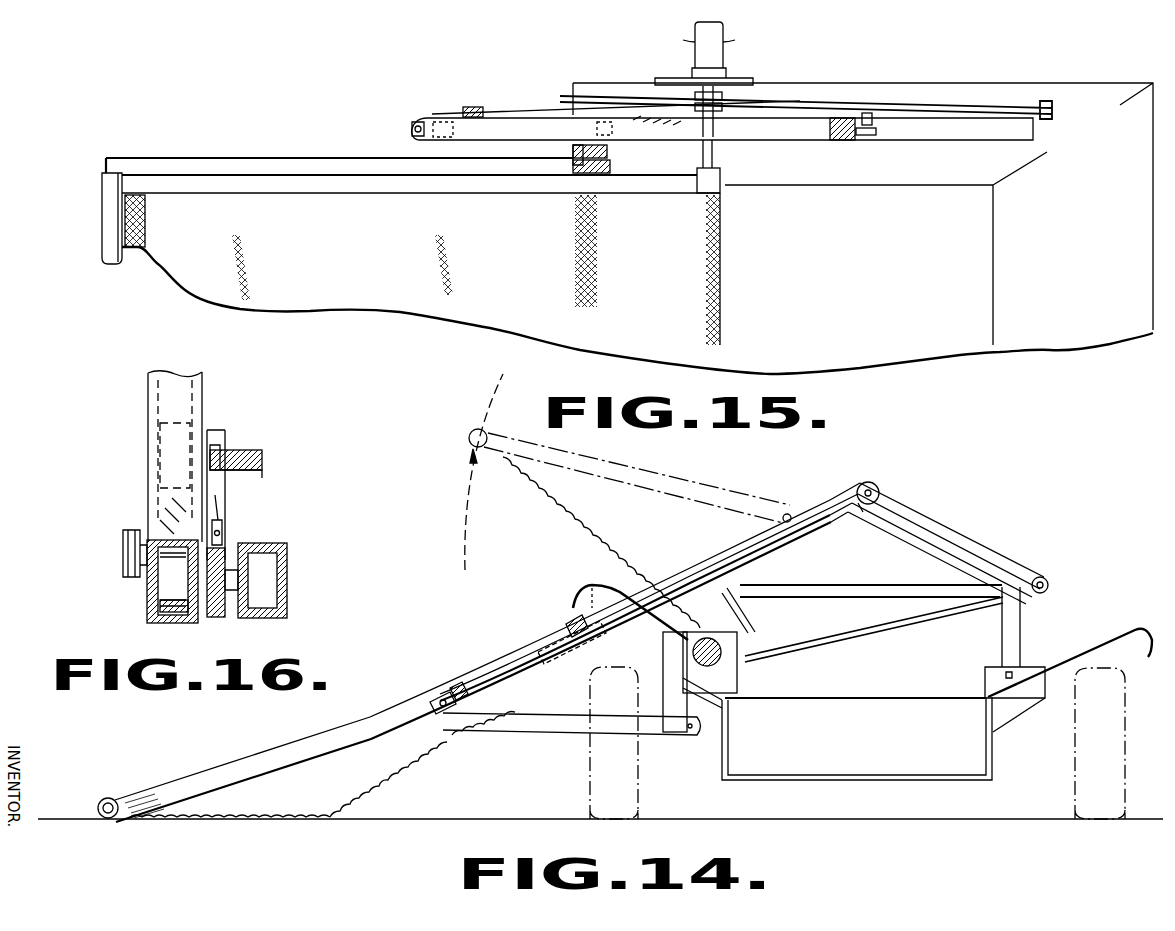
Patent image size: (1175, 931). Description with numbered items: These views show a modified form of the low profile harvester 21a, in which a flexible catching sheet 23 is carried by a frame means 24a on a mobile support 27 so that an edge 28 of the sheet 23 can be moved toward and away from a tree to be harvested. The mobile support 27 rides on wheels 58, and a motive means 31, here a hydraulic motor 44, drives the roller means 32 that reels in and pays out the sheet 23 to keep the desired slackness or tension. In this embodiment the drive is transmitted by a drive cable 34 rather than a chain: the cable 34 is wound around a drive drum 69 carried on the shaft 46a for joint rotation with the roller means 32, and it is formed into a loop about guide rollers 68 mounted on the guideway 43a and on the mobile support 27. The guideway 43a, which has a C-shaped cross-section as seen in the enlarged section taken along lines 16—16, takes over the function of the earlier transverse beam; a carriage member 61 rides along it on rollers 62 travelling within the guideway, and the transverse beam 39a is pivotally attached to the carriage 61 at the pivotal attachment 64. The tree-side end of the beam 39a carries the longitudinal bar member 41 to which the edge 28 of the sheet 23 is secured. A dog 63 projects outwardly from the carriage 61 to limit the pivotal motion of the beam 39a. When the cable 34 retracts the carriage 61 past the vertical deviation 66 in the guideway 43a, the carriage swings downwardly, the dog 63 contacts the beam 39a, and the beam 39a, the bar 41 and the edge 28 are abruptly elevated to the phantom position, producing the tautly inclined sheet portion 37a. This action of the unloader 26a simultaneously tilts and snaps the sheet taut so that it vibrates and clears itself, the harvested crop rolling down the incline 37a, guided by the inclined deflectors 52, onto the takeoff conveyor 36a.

In FIG. 14, the section lines 16 is at (462, 651).
In FIG. 14, the loader assembly 21a is at (996, 525).
In FIG. 15, the flexible catching sheet 23 is at (392, 272).
In FIG. 14, the flexible catching sheet 23 is at (318, 815).
In FIG. 15, the boom arm 24a is at (629, 231).
In FIG. 14, the boom arm 24a is at (473, 661).
In FIG. 14, the pivot axis 26a is at (555, 558).
In FIG. 14, the mobile support 27 is at (705, 750).
In FIG. 15, the edge of the sheet 28 is at (118, 228).
In FIG. 15, the motive means 31 is at (760, 71).
In FIG. 15, the roller means 32 is at (722, 190).
In FIG. 14, the roller means 32 is at (738, 678).
In FIG. 15, the drive cable 34 is at (852, 100).
In FIG. 16, the drive cable 34 is at (220, 505).
In FIG. 14, the drive cable 34 is at (892, 622).
In FIG. 15, the takeoff conveyor 36a is at (965, 275).
In FIG. 14, the takeoff conveyor 36a is at (958, 760).
In FIG. 14, the tautly inclined sheet portion 37a is at (605, 537).
In FIG. 15, the transverse beam 39a is at (180, 158).
In FIG. 16, the transverse beam 39a is at (288, 575).
In FIG. 14, the transverse beam 39a is at (258, 755).
In FIG. 15, the longitudinal bar member 41 is at (101, 178).
In FIG. 14, the longitudinal bar member 41 is at (106, 798).
In FIG. 15, the guideway 43a is at (517, 118).
In FIG. 16, the guideway 43a is at (150, 606).
In FIG. 14, the guideway 43a is at (890, 522).
In FIG. 15, the hydraulic motor 44 is at (722, 34).
In FIG. 15, the shaft 46a is at (715, 155).
In FIG. 14, the inclined deflector 52 is at (1092, 648).
In FIG. 14, the wheels 58 is at (590, 782).
In FIG. 15, the carriage member 61 is at (612, 150).
In FIG. 16, the carriage member 61 is at (228, 550).
In FIG. 14, the carriage member 61 is at (547, 660).
In FIG. 15, the rollers 62 is at (448, 121).
In FIG. 16, the rollers 62 is at (172, 614).
In FIG. 14, the rollers 62 is at (432, 696).
In FIG. 15, the dog 63 is at (612, 168).
In FIG. 16, the dog 63 is at (258, 452).
In FIG. 14, the dog 63 is at (570, 630).
In FIG. 15, the pivotal attachment 64 is at (410, 130).
In FIG. 14, the pivotal attachment 64 is at (437, 722).
In FIG. 14, the vertical deviation 66 is at (840, 488).
In FIG. 14, the guide rollers 68 is at (1048, 584).
In FIG. 15, the drive drum 69 is at (700, 95).
In FIG. 14, the drive drum 69 is at (745, 650).